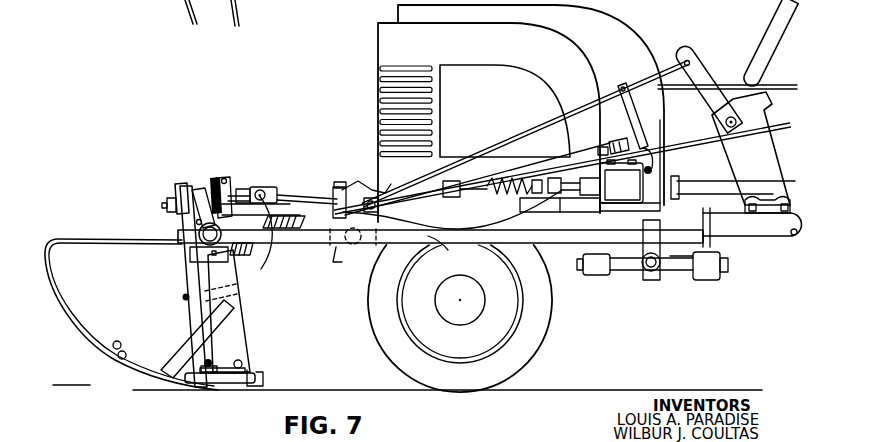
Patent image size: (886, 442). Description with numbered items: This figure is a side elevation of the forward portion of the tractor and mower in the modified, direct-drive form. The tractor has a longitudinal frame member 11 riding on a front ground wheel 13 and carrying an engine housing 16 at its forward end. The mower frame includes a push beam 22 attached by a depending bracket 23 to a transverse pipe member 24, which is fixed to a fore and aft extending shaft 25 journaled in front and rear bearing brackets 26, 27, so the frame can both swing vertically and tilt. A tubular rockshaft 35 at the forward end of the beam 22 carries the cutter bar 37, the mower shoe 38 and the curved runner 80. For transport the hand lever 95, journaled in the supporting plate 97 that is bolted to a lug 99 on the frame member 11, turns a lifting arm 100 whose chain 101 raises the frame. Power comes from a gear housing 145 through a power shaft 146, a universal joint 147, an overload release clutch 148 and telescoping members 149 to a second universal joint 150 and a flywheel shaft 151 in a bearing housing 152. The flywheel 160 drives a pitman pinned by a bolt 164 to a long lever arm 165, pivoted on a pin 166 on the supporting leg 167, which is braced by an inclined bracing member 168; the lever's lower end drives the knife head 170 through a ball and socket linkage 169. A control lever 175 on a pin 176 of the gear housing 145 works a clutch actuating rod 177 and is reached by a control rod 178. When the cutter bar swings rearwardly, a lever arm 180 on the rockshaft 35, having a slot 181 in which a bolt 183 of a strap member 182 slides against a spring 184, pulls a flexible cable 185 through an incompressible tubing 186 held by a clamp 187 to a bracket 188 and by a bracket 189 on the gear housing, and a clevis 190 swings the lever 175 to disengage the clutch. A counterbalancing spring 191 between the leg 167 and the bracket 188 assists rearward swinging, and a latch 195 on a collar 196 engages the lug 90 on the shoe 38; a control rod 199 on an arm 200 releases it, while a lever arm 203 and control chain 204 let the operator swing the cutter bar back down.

The frame member 11 is at (743, 236).
The ground wheel 13 is at (546, 305).
The engine housing 16 is at (470, 50).
The frame beam 22 is at (560, 244).
The depending bracket 23 is at (666, 272).
The transverse pipe member 24 is at (651, 282).
The fore and aft extending shaft 25 is at (707, 186).
The front bearing bracket 26 is at (598, 276).
The rear bearing bracket 27 is at (724, 276).
The rockshaft 35 is at (190, 252).
The cutter bar 37 is at (235, 384).
The mower shoe 38 is at (138, 364).
The curved runner 80 is at (72, 316).
The lug 90 is at (258, 372).
The hand lever 95 is at (777, 15).
The supporting plate 97 is at (752, 154).
The lug 99 is at (746, 205).
The lifting arm 100 is at (697, 70).
The chain 101 is at (584, 117).
The gear housing 145 is at (621, 190).
The power shaft 146 is at (586, 197).
The universal joint 147 is at (552, 196).
The overload release clutch 148 is at (525, 180).
The telescoping members 149 is at (478, 187).
The universal joint 150 is at (262, 186).
The flywheel shaft 151 is at (244, 188).
The bearing housing 152 is at (196, 190).
The flywheel 160 is at (176, 191).
The bolt 164 is at (163, 205).
The lever arm 165 is at (190, 272).
The pivot pin 166 is at (182, 297).
The supporting leg 167 is at (234, 316).
The bracing member 168 is at (196, 340).
The ball and socket linkage 169 is at (204, 367).
The knife head 170 is at (208, 372).
The control lever 175 is at (637, 115).
The pin 176 is at (653, 169).
The clutch actuating rod 177 is at (650, 150).
The control rod 178 is at (657, 78).
The lever arm 180 is at (223, 178).
The slot 181 is at (199, 234).
The strap member 182 is at (290, 236).
The bolt 183 is at (197, 222).
The spring 184 is at (213, 180).
The flexible cable 185 is at (300, 196).
The flexible incompressible tubing 186 is at (438, 244).
The clamp 187 is at (337, 190).
The bracket 188 is at (341, 182).
The bracket 189 is at (600, 150).
The clevis 190 is at (617, 141).
The counterbalancing spring 191 is at (236, 288).
The latch 195 is at (337, 265).
The collar 196 is at (346, 247).
The control rod 199 is at (403, 193).
The arm 200 is at (369, 198).
The lever arm 203 is at (242, 244).
The control chain 204 is at (228, 177).